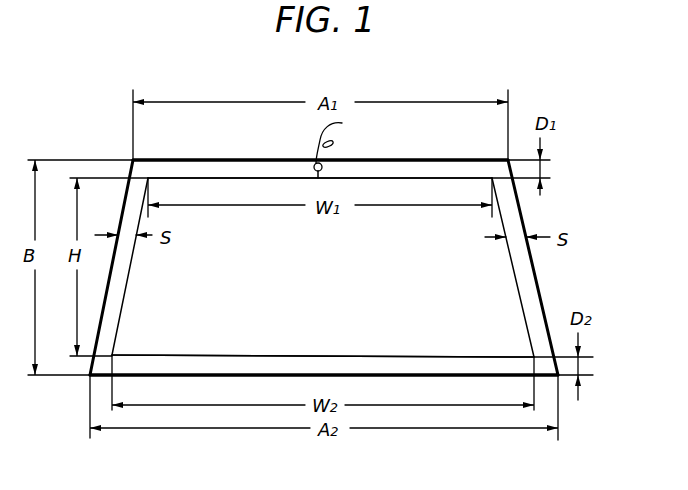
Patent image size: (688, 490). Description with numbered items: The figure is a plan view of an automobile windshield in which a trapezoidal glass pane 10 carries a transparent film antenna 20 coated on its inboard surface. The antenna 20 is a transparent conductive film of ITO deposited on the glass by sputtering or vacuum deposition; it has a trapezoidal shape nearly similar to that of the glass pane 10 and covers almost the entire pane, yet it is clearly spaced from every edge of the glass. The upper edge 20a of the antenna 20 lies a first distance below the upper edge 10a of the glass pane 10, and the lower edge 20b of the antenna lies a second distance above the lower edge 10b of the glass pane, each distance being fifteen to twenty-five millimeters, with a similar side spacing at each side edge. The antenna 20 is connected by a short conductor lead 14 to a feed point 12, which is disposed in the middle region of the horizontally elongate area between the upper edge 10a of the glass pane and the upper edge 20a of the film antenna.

The glass pane 10 is at (523, 223).
The upper edge of the glass pane 10a is at (186, 158).
The lower edge of the glass pane 10b is at (157, 376).
The feed point 12 is at (314, 164).
The lead 14 is at (322, 176).
The antenna 20 is at (495, 290).
The upper edge of the antenna 20a is at (225, 179).
The lower edge of the antenna 20b is at (193, 353).